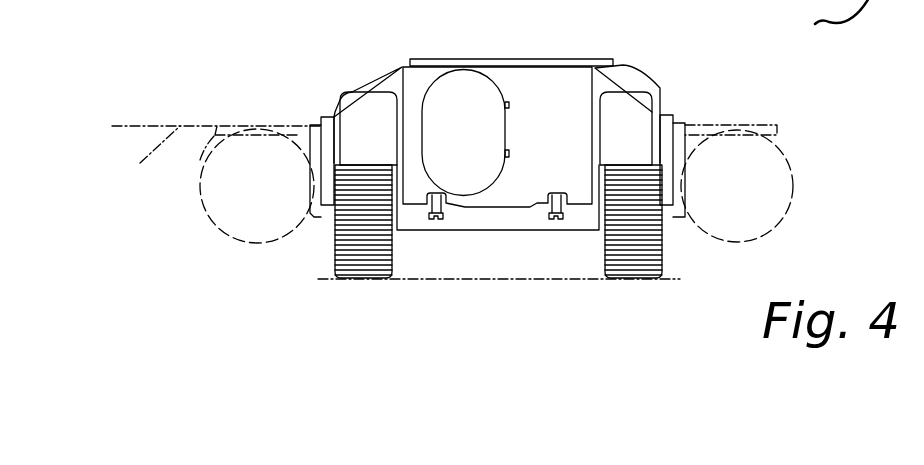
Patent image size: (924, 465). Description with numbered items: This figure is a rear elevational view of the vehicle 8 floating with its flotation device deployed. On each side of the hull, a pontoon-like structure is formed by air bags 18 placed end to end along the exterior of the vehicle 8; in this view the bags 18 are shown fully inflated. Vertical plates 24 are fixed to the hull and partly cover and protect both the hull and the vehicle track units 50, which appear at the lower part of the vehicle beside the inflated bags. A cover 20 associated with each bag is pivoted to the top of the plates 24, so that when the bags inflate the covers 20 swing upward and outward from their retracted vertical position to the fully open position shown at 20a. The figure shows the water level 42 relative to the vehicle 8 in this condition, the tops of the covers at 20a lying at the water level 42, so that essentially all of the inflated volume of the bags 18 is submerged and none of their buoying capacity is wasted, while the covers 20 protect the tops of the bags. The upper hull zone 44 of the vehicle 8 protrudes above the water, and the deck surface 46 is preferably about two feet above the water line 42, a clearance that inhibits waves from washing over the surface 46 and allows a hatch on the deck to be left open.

The vehicle 8 is at (637, 64).
The air bags 18 is at (206, 207).
The covers 20 is at (313, 217).
The fully open position of covers 20a is at (227, 127).
The vertical plates 24 is at (327, 205).
The water level 42 is at (140, 163).
The upper hull zone 44 is at (357, 90).
The deck surface 46 is at (408, 62).
The vehicle track units 50 is at (370, 253).